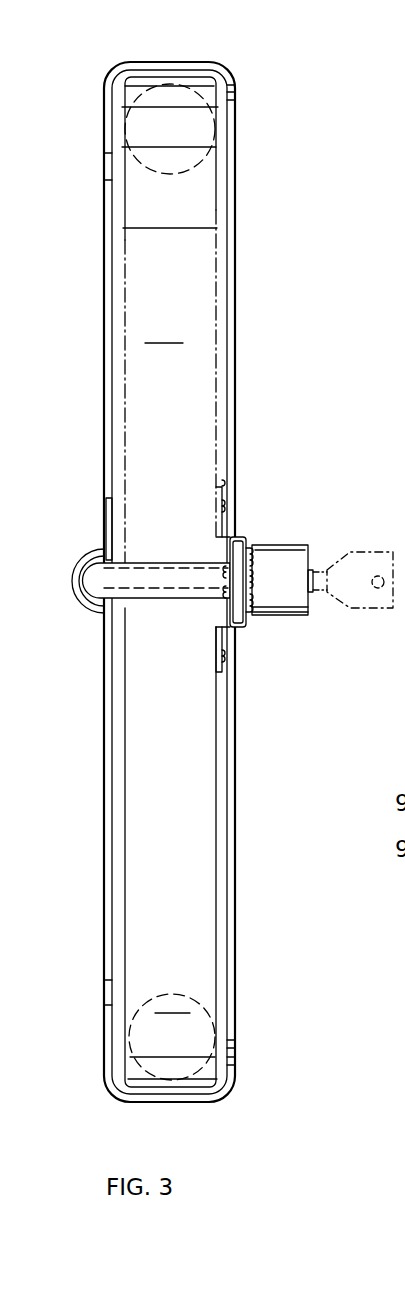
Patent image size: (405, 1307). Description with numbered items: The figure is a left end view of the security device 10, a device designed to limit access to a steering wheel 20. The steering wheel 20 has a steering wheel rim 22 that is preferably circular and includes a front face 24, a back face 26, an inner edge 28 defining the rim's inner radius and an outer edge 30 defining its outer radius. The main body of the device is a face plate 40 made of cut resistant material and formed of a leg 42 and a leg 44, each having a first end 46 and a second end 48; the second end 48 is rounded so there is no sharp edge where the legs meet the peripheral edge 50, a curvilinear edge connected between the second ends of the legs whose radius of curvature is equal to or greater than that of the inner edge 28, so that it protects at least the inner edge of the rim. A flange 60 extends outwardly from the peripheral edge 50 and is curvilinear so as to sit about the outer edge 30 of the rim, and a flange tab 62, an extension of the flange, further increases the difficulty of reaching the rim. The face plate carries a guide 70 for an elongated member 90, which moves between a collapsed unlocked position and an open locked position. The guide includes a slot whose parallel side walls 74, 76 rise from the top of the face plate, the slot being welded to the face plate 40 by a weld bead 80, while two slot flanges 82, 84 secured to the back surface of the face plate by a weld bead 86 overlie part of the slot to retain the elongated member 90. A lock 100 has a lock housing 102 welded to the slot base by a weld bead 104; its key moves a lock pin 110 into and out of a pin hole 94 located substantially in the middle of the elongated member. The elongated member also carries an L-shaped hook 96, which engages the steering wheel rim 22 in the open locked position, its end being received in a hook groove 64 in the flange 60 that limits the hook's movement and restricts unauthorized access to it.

The security device 10 is at (303, 238).
The steering wheel 20 is at (205, 76).
The steering wheel rim 22 is at (216, 126).
The front face 24 is at (218, 1042).
The back face 26 is at (128, 1042).
The inner edge 28 is at (175, 993).
The outer edge 30 is at (172, 1082).
The face plate 40 is at (237, 307).
The leg 42 is at (238, 978).
The leg 44 is at (237, 172).
The first end 46 is at (230, 541).
The second end 48 is at (236, 104).
The peripheral edge 50 is at (234, 78).
The flange 60 is at (160, 62).
The flange tab 62 is at (105, 128).
The hook groove 64 is at (77, 595).
The guide 70 is at (256, 540).
The side wall 74 is at (241, 535).
The side wall 76 is at (240, 630).
The weld bead 80 is at (245, 530).
The slot flange 82 is at (226, 640).
The slot flange 84 is at (217, 487).
The weld bead 86 is at (222, 472).
The elongated member 90 is at (232, 618).
The pin hole 94 is at (248, 627).
The hook 96 is at (95, 566).
The lock 100 is at (308, 546).
The lock housing 102 is at (305, 614).
The weld bead 104 is at (270, 620).
The lock pin 110 is at (230, 580).